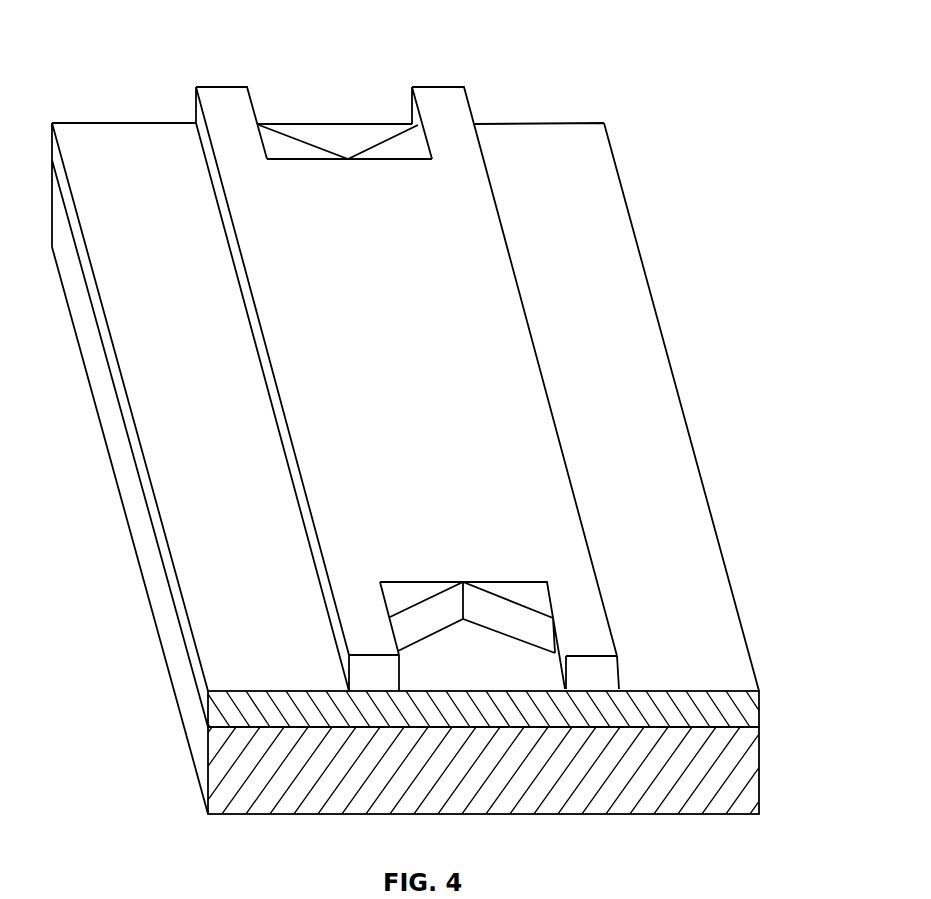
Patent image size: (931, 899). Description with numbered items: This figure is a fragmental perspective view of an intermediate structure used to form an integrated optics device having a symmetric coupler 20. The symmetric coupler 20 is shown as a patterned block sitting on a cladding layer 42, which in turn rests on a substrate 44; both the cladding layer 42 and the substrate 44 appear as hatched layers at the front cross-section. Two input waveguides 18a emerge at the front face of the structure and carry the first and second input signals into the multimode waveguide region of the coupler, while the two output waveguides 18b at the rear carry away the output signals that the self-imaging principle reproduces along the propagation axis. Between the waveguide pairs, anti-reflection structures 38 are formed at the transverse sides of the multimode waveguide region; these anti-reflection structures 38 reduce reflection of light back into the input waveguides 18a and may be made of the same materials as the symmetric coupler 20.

The input waveguides 18a is at (371, 641).
The output waveguides 18b is at (227, 105).
The symmetric coupler 20 is at (500, 327).
The anti-reflection structures 38 is at (276, 143).
The cladding layer 42 is at (760, 710).
The substrate 44 is at (760, 770).